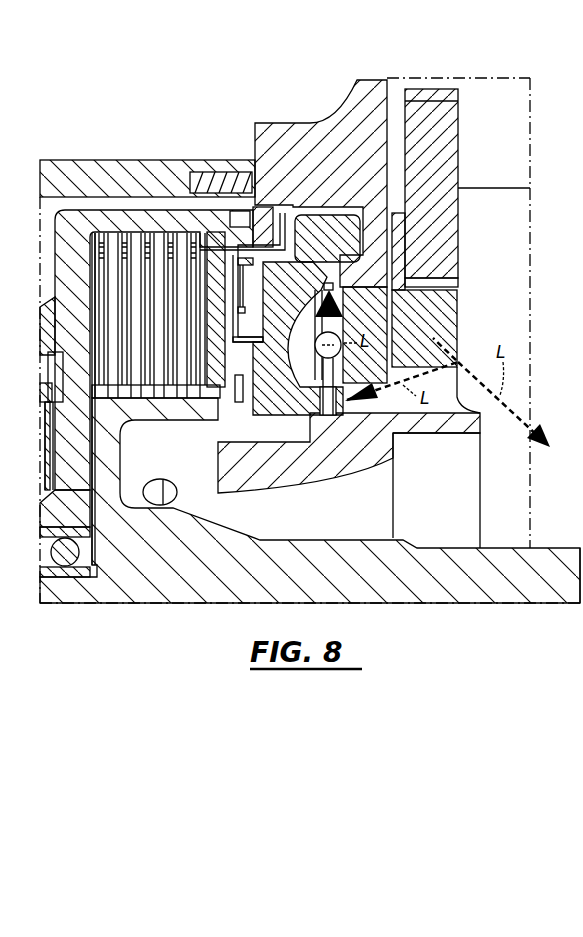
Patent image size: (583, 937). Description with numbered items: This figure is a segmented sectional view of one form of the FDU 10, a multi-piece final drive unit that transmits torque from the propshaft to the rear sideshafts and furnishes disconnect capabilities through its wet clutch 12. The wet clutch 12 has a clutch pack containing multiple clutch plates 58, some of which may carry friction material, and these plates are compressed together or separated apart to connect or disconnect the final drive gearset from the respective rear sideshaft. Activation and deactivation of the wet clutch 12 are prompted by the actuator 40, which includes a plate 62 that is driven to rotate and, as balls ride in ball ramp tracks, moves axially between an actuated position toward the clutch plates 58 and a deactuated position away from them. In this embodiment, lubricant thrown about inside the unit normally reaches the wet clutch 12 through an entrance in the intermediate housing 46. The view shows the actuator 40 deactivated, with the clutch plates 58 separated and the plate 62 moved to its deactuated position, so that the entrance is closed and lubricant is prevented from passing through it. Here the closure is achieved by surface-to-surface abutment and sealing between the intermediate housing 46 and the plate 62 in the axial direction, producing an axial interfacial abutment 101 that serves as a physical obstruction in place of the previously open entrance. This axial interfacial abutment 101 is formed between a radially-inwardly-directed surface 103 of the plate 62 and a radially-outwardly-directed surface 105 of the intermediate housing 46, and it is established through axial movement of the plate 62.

The FDU 10 is at (158, 44).
The wet clutch 12 is at (132, 233).
The clutch plates 58 is at (165, 233).
The actuator 40 is at (323, 217).
The plate 62 is at (337, 233).
The radially-inwardly-directed surface 103 is at (297, 373).
The axial interfacial abutment 101 is at (282, 390).
The radially-outwardly-directed surface 105 is at (328, 385).
The intermediate housing 46 is at (423, 427).